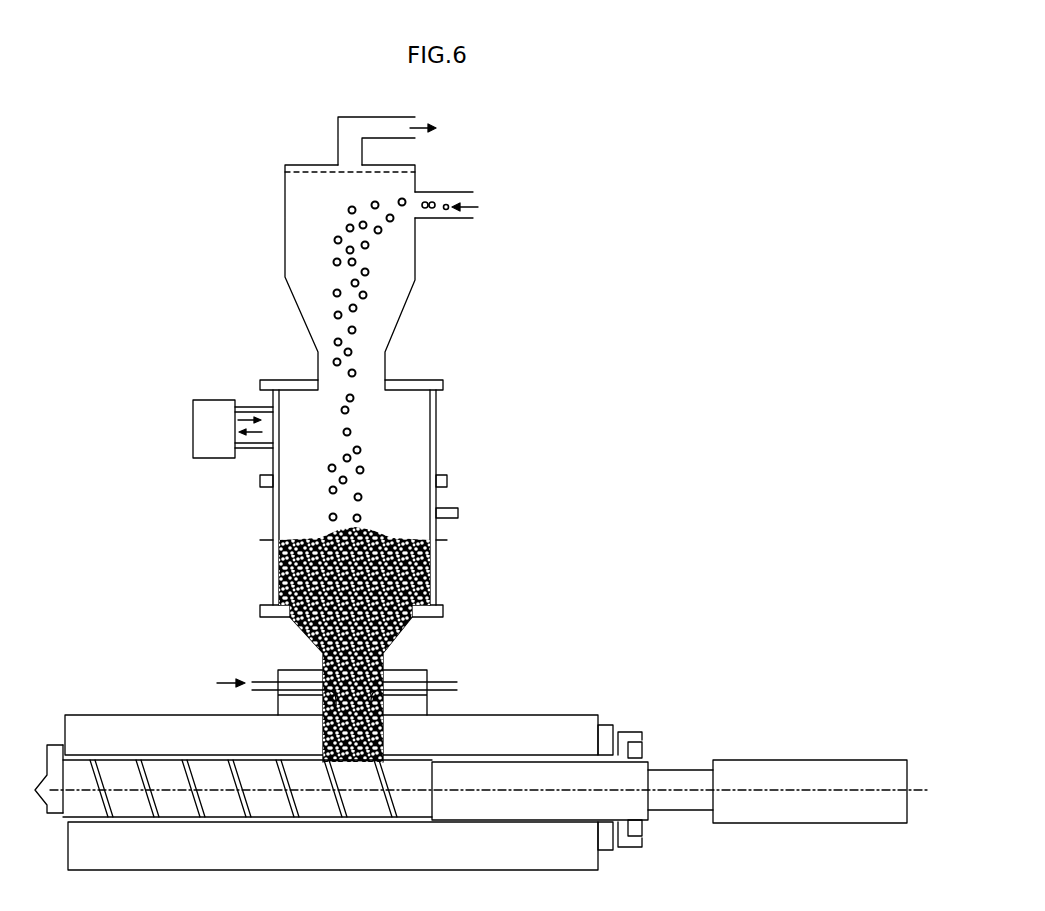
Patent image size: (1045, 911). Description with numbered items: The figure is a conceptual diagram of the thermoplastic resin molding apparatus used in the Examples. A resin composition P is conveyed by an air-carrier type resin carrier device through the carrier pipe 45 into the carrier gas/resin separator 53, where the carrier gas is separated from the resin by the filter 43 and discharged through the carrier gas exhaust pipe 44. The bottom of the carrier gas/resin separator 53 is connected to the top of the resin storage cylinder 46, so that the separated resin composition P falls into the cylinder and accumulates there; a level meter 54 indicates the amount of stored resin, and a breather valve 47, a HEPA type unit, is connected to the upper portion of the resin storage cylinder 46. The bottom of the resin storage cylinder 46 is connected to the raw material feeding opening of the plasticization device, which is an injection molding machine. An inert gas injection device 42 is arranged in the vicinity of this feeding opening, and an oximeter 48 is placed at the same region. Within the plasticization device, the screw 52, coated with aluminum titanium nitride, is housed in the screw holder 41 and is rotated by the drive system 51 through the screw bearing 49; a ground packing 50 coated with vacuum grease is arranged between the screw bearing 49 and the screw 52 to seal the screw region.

The screw holder 41 is at (175, 713).
The inactive gas injection device 42 is at (243, 680).
The filter 43 is at (305, 175).
The carrier gas exhaust pipe 44 is at (405, 138).
The carrier pipe 45 is at (482, 200).
The resin storage cylinder 46 is at (408, 435).
The breather valve 47 is at (192, 393).
The oximeter 48 is at (458, 677).
The screw bearing 49 is at (630, 722).
The ground packing 50 is at (645, 743).
The drive system 51 is at (780, 768).
The screw 52 is at (113, 775).
The carrier gas/resin separator 53 is at (310, 244).
The level meter 54 is at (458, 512).
The resin composition P is at (368, 272).